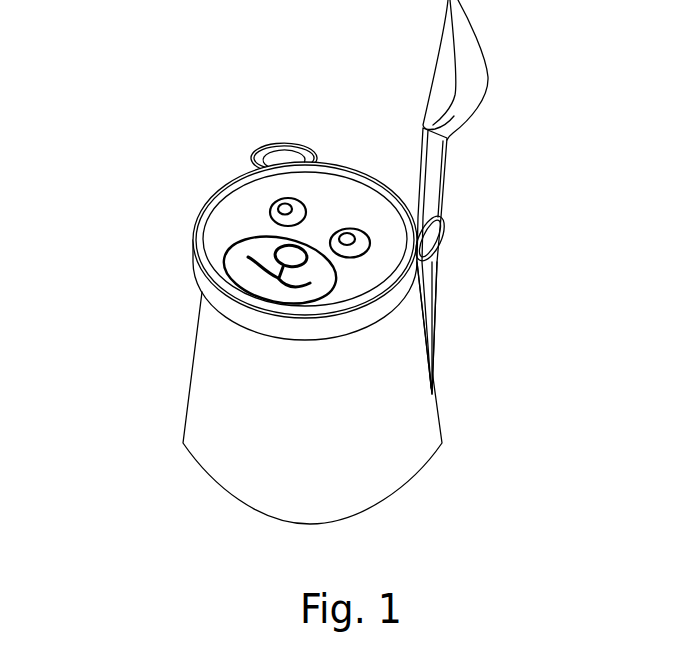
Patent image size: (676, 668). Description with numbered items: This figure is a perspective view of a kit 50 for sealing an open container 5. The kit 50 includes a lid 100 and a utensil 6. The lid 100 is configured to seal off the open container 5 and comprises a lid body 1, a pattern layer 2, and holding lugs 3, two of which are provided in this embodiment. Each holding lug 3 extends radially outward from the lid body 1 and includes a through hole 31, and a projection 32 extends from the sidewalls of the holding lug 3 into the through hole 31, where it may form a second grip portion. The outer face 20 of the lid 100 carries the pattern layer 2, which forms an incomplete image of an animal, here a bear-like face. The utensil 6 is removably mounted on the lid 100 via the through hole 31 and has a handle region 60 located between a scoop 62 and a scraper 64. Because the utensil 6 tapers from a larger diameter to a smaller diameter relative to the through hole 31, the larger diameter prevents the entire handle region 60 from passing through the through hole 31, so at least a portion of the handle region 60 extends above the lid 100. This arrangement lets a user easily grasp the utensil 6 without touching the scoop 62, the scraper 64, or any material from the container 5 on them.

The kit 50 is at (244, 296).
The lid 100 is at (286, 307).
The lid body 1 is at (216, 221).
The pattern layer 2 is at (236, 258).
The outer face 20 is at (355, 195).
The holding lug 3 is at (258, 153).
The through hole 31 is at (282, 153).
The projection 32 is at (389, 175).
The open container 5 is at (207, 381).
The utensil 6 is at (426, 161).
The handle region 60 is at (462, 197).
The scoop 62 is at (453, 80).
The scraper 64 is at (437, 370).